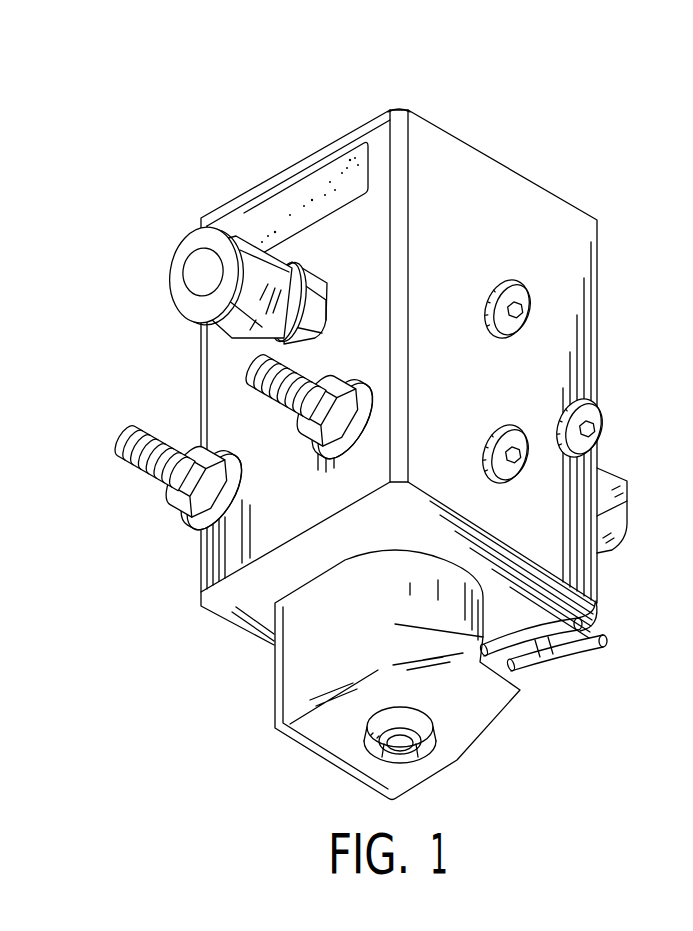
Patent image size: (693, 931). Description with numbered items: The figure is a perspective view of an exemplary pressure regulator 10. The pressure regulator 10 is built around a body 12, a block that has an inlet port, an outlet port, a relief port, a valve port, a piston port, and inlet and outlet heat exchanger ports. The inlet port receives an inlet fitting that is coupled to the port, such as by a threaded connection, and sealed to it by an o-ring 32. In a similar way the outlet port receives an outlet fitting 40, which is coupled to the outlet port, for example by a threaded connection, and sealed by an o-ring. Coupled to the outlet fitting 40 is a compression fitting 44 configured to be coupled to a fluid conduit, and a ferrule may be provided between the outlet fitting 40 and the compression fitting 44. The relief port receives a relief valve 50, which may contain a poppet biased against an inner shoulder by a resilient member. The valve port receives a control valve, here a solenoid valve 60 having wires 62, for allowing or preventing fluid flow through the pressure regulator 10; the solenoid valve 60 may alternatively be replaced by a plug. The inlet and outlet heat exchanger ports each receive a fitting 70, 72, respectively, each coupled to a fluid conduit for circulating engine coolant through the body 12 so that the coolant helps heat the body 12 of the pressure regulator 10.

The pressure regulator 10 is at (546, 116).
The body 12 is at (532, 201).
The o-ring 32 is at (598, 623).
The outlet fitting 40 is at (321, 306).
The compression fitting 44 is at (262, 242).
The relief valve 50 is at (618, 503).
The solenoid valve 60 is at (478, 718).
The wires 62 is at (543, 659).
The fitting 70 is at (254, 366).
The fitting 72 is at (126, 430).